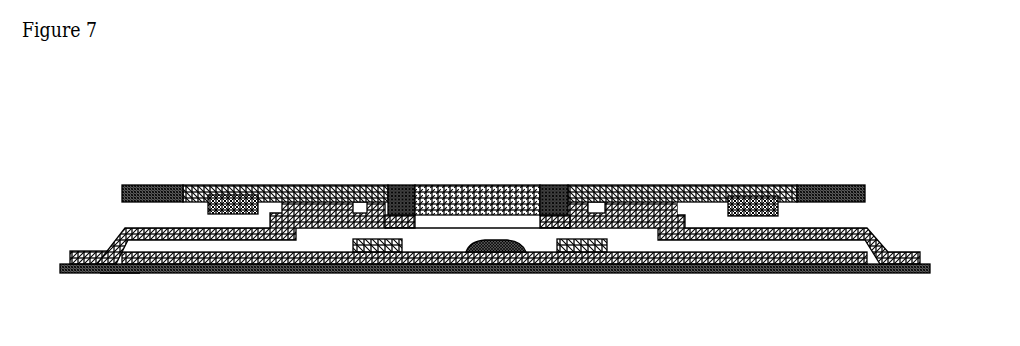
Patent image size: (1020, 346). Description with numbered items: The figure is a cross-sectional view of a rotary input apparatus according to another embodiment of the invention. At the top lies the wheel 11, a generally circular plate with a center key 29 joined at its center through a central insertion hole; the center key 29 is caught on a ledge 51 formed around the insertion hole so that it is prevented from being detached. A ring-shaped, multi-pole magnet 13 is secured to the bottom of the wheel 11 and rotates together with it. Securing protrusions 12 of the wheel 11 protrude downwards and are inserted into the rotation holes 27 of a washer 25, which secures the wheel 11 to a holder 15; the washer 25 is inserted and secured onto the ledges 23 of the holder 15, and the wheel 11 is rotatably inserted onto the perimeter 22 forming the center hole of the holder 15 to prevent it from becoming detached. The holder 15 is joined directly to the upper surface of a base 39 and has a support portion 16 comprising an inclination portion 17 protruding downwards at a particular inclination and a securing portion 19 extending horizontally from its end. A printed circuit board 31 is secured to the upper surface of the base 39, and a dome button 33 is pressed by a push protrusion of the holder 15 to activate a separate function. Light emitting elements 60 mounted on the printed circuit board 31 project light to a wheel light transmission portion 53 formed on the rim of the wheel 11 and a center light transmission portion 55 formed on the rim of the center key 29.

The wheel 11 is at (190, 197).
The securing protrusions 12 is at (400, 230).
The magnet 13 is at (240, 198).
The holder 15 is at (303, 212).
The support portion 16 is at (872, 229).
The inclination portion 17 is at (117, 232).
The securing portion 19 is at (78, 252).
The perimeter 22 is at (289, 206).
The ledges 23 is at (344, 229).
The washer 25 is at (418, 218).
The rotation holes 27 is at (378, 212).
The center key 29 is at (506, 192).
The printed circuit board 31 is at (633, 274).
The dome button 33 is at (492, 253).
The base 39 is at (118, 273).
The ledge 51 is at (400, 190).
The wheel light transmission portion 53 is at (147, 185).
The center light transmission portion 55 is at (552, 192).
The light emitting elements 60 is at (385, 250).